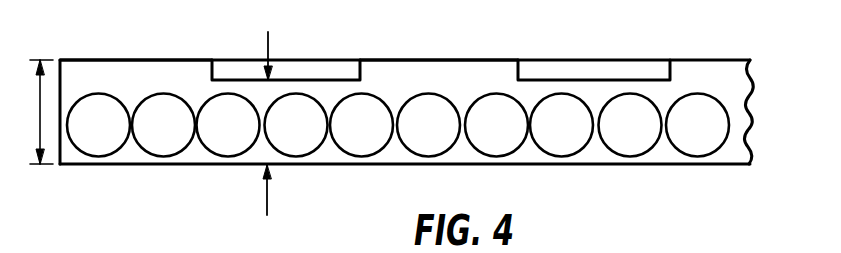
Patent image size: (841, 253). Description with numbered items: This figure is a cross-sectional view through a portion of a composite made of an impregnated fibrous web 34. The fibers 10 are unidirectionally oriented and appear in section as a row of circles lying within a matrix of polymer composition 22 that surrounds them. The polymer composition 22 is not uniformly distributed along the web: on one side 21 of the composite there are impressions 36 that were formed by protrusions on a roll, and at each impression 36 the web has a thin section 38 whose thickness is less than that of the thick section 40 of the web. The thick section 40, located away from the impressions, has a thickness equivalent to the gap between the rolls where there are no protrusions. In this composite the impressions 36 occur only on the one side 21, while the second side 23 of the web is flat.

The fibers 10 is at (92, 140).
The one side 21 is at (435, 59).
The polymer composition 22 is at (90, 67).
The second side 23 is at (325, 166).
The impregnated fibrous web 34 is at (164, 63).
The impressions 36 is at (230, 72).
The thin sections 38 is at (268, 58).
The thick section 40 is at (41, 112).